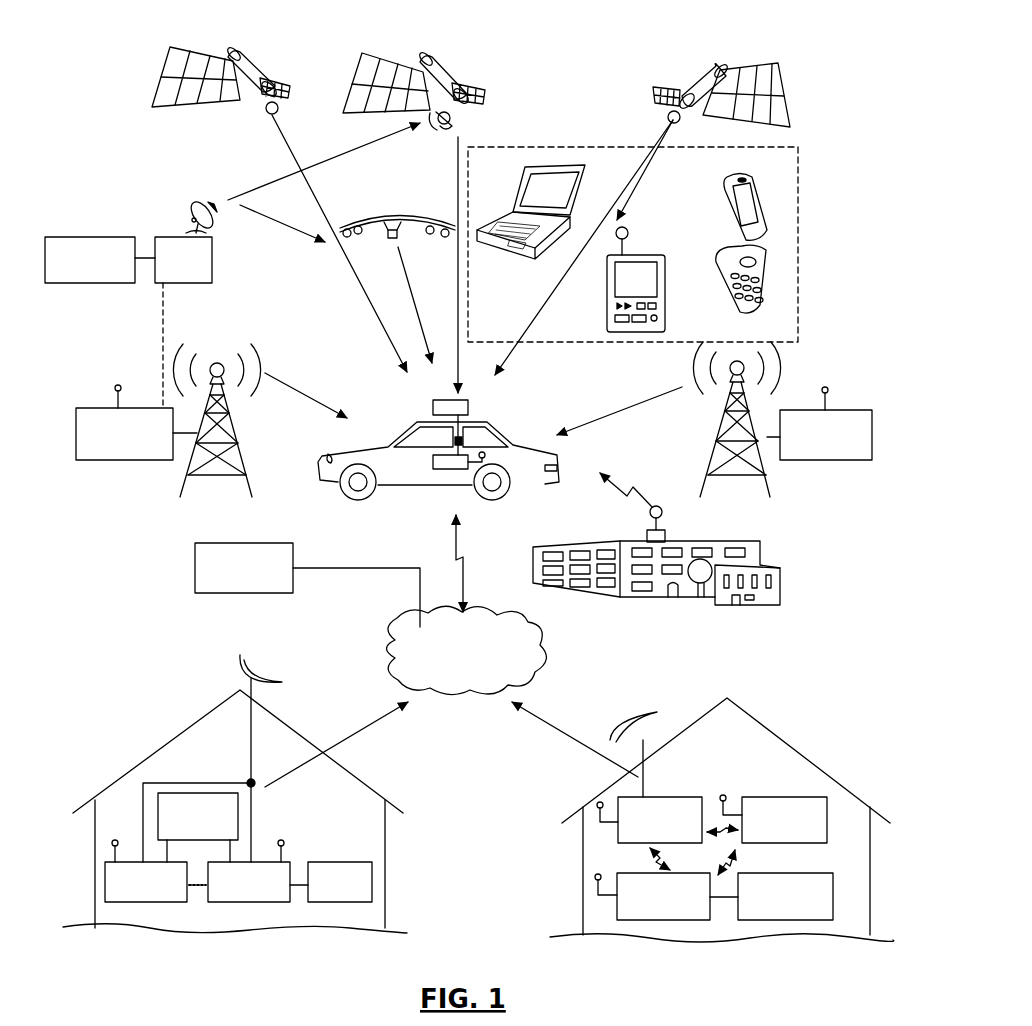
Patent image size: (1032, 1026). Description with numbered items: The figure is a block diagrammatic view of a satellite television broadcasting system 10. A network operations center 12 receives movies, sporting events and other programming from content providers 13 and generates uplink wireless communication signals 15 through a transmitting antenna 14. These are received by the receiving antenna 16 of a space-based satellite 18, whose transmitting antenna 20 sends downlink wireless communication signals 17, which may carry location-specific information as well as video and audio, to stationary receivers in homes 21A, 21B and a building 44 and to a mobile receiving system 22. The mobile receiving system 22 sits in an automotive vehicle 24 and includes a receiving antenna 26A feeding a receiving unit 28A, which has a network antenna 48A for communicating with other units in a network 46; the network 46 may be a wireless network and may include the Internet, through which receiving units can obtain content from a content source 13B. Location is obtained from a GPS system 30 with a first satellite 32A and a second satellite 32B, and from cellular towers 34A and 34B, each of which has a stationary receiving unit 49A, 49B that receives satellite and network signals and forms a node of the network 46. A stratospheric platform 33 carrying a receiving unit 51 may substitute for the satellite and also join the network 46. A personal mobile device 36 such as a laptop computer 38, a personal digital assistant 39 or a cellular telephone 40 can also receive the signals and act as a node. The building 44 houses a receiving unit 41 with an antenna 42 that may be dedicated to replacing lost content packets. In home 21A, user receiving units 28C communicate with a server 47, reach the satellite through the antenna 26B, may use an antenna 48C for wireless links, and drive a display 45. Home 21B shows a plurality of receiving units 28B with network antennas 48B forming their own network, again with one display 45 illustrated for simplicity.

The satellite television broadcasting system 10 is at (200, 165).
The network operations center 12 is at (213, 263).
The content provider 13 is at (83, 237).
The content source 13B is at (245, 543).
The transmitting antenna 14 is at (217, 223).
The wireless communication signals 15 is at (267, 182).
The receiving antenna 16 is at (437, 128).
The wireless communication signals 17 is at (460, 142).
The satellite 18 is at (447, 78).
The transmitting antenna 20 is at (455, 128).
The home 21A is at (140, 765).
The home 21B is at (772, 728).
The mobile receiving system 22 is at (455, 437).
The automotive vehicle 24 is at (561, 455).
The receiving antenna 26A is at (433, 407).
The antenna 26B is at (267, 680).
The receiving unit 28A is at (445, 469).
The receiving unit 28B is at (827, 813).
The user receiving unit 28C is at (125, 904).
The GPS system 30 is at (143, 68).
The first satellite 32A is at (253, 67).
The second satellite 32B is at (700, 60).
The stratospheric platform 33 is at (360, 222).
The cellular tower 34A is at (233, 417).
The cellular tower 34B is at (720, 428).
The personal mobile device 36 is at (798, 178).
The laptop computer 38 is at (505, 255).
The personal digital assistant 39 is at (652, 253).
The cellular telephone 40 is at (718, 225).
The receiving unit 41 is at (651, 535).
The antenna 42 is at (663, 512).
The building 44 is at (732, 541).
The display 45 is at (337, 904).
The network 46 is at (392, 638).
The server 47 is at (180, 793).
The network antenna 48A is at (485, 456).
The network antenna 48B is at (600, 822).
The antenna 48C is at (115, 840).
The receiving unit 49A is at (86, 408).
The receiving unit 49B is at (847, 410).
The receiving unit 51 is at (393, 227).